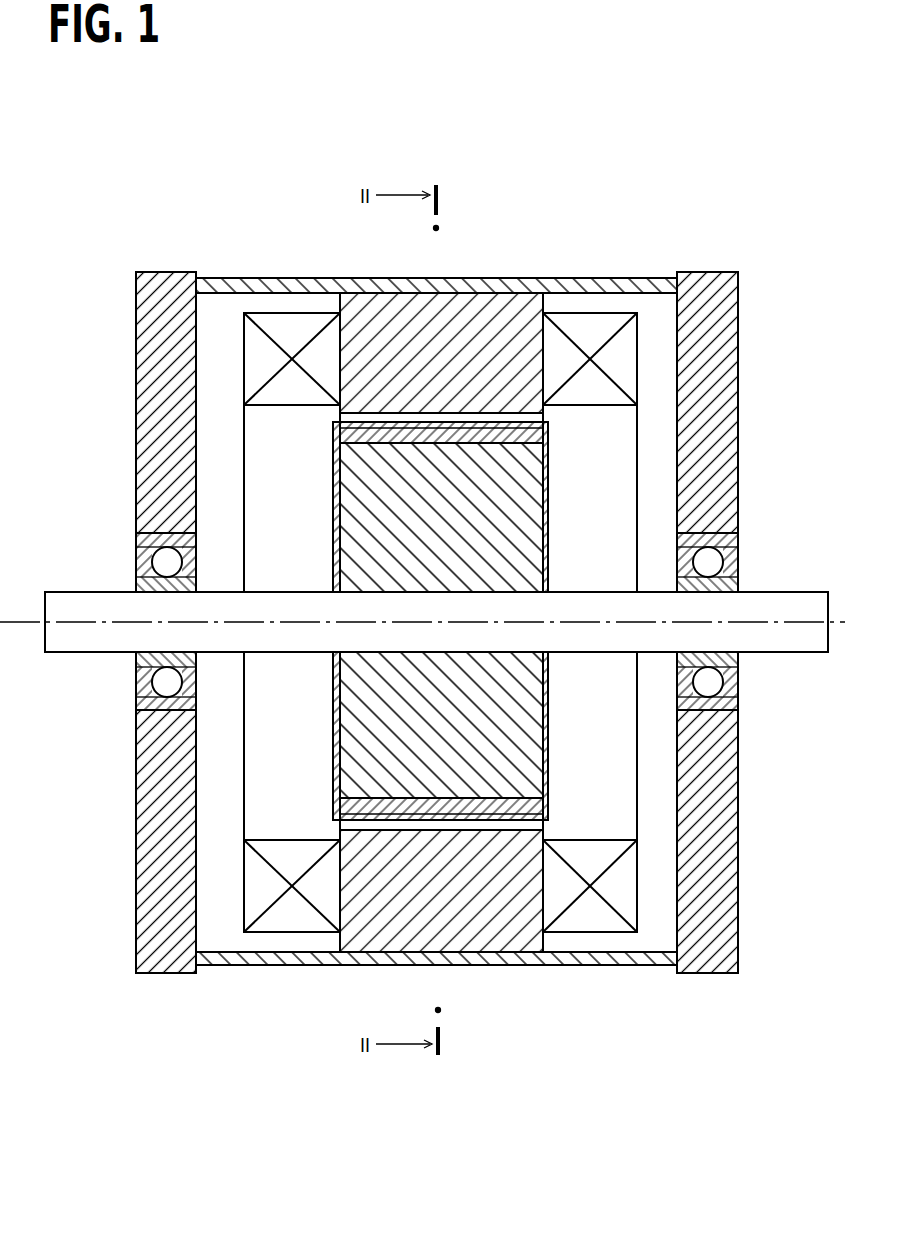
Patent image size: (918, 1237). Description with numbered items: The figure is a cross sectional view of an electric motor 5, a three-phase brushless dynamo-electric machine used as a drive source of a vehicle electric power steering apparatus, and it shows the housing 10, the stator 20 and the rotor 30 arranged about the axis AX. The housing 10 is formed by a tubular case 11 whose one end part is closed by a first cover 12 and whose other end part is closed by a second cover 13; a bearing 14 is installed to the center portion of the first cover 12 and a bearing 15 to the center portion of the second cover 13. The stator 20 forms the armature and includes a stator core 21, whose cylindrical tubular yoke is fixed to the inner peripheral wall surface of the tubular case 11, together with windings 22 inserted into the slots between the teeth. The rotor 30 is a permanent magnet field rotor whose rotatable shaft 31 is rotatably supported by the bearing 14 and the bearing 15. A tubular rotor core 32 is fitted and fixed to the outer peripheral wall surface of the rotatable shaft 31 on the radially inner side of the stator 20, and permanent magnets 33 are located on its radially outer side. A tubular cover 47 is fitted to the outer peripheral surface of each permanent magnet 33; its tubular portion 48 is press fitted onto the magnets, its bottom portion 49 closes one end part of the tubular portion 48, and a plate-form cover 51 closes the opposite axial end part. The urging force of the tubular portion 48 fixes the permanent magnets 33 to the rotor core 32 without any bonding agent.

The electric motor 5 is at (158, 243).
The housing 10 is at (320, 276).
The tubular case 11 is at (256, 280).
The first cover 12 is at (155, 342).
The second cover 13 is at (723, 350).
The bearing 14 is at (162, 563).
The bearing 15 is at (708, 562).
The stator 20 is at (472, 290).
The stator core 21 is at (515, 300).
The windings 22 is at (600, 330).
The rotor 30 is at (552, 487).
The rotatable shaft 31 is at (104, 640).
The rotor core 32 is at (400, 505).
The permanent magnets 33 is at (338, 434).
The tubular cover 47 is at (340, 423).
The tubular portion 48 is at (411, 418).
The bottom portion 49 is at (336, 540).
The cover 51 is at (548, 522).
The rotation axis AX is at (765, 620).